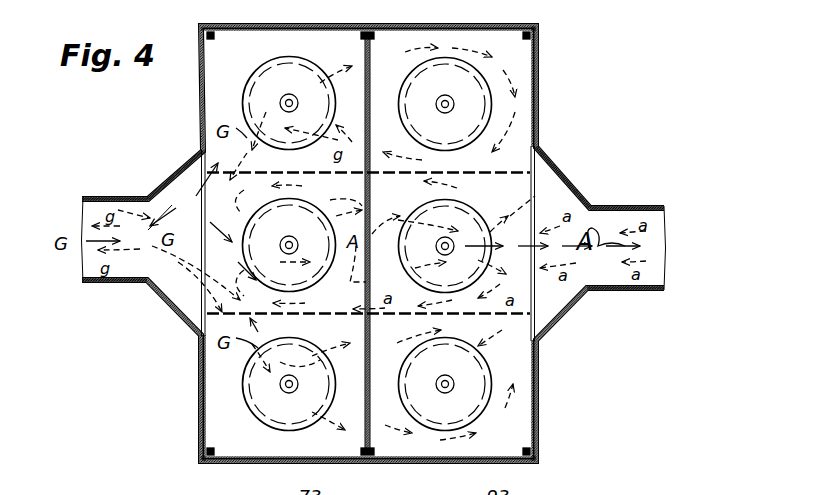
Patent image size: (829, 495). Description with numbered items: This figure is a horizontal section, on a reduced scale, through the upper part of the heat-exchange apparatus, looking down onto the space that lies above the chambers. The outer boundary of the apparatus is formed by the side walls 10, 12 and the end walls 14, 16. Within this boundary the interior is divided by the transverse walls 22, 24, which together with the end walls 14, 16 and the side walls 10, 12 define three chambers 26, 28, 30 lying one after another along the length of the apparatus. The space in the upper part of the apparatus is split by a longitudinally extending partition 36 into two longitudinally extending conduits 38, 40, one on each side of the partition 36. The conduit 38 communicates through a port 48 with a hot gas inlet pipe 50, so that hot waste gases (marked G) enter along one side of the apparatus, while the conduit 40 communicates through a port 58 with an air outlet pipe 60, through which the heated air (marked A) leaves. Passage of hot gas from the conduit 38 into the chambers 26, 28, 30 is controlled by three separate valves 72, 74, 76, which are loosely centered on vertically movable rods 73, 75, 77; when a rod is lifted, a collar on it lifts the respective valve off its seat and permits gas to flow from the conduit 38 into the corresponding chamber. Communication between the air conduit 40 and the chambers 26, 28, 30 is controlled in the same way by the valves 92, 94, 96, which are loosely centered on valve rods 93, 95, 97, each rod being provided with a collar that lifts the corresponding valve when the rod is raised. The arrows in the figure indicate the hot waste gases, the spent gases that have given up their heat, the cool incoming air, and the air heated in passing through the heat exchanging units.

The side wall 10 is at (200, 106).
The side wall 12 is at (538, 79).
The end wall 14 is at (230, 28).
The end wall 16 is at (249, 463).
The transverse wall 22 is at (514, 176).
The transverse wall 24 is at (487, 321).
The chamber 26 is at (522, 111).
The chamber 28 is at (520, 197).
The chamber 30 is at (514, 416).
The longitudinally extending partition 36 is at (372, 93).
The conduit 38 is at (207, 380).
The conduit 40 is at (520, 59).
The port 48 is at (199, 160).
The hot gas inlet pipe 50 is at (117, 284).
The port 58 is at (534, 165).
The air outlet pipe 60 is at (664, 292).
The valve 72 is at (289, 103).
The valve rod 73 is at (285, 104).
The valve 74 is at (289, 245).
The valve rod 75 is at (284, 246).
The valve 76 is at (289, 384).
The valve rod 77 is at (284, 386).
The valve 92 is at (445, 104).
The valve rod 93 is at (441, 105).
The valve 94 is at (445, 246).
The valve rod 95 is at (441, 247).
The valve 96 is at (445, 384).
The valve rod 97 is at (441, 386).